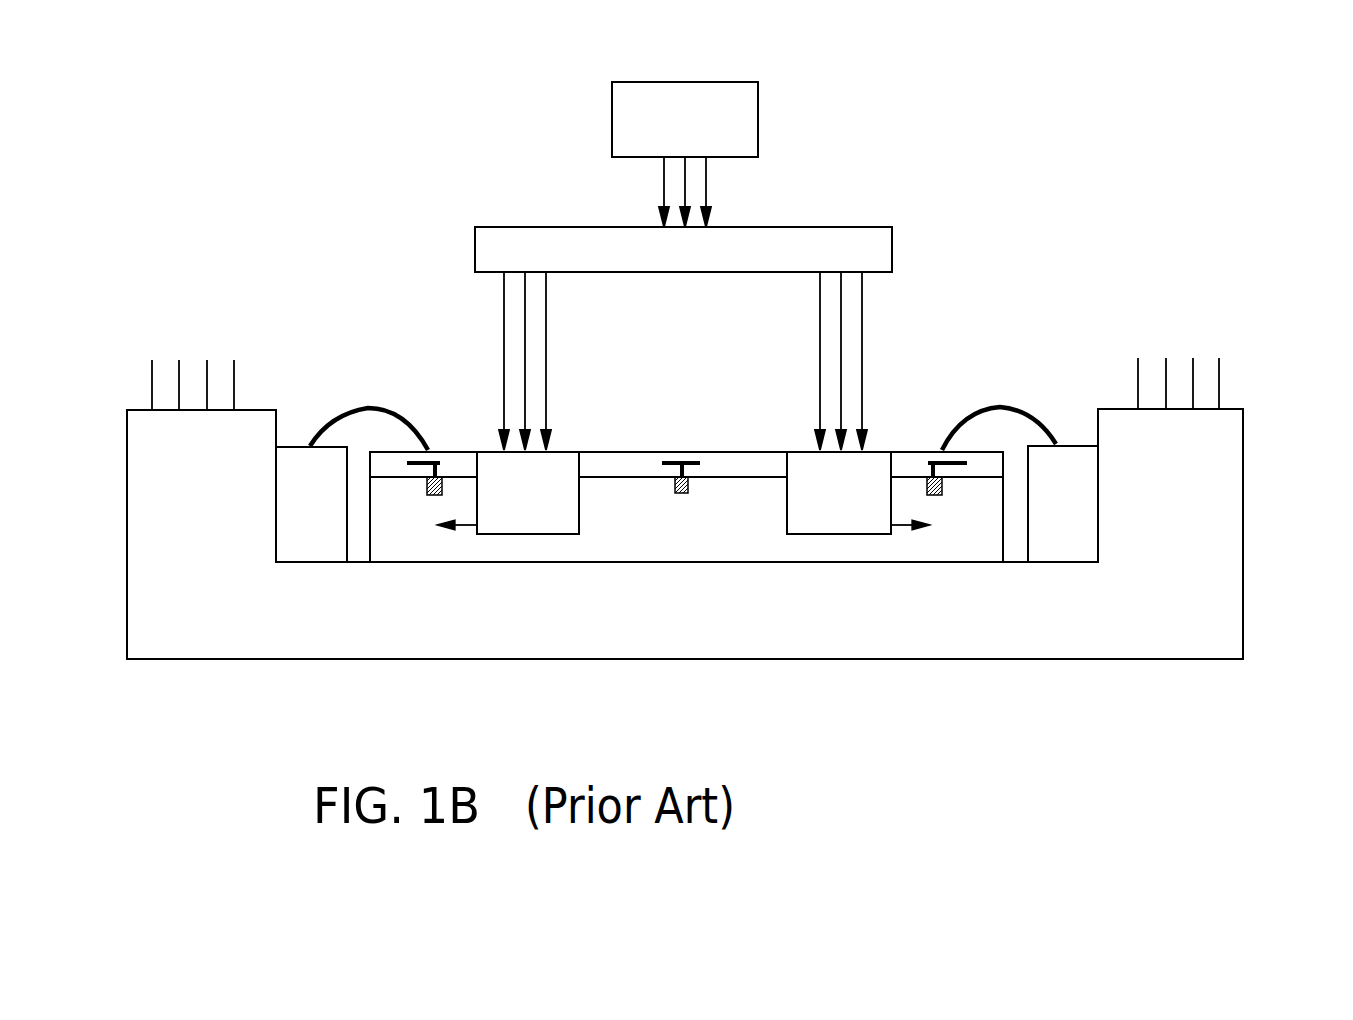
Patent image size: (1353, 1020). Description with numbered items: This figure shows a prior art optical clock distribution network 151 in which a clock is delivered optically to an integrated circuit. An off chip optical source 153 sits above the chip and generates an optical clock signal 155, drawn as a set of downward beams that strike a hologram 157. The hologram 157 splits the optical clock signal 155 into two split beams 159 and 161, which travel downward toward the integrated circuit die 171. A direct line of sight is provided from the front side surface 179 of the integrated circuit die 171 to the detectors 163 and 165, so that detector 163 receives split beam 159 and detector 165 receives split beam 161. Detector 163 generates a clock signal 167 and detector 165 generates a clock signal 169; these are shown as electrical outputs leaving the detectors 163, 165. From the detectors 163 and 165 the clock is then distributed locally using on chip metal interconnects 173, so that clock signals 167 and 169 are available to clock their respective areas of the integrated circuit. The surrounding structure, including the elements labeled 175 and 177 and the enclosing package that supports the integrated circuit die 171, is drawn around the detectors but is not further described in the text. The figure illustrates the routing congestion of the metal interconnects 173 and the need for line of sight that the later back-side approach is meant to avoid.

The optical clock distribution network 151 is at (1022, 112).
The off chip optical source 153 is at (759, 103).
The optical clock signal 155 is at (707, 192).
The hologram 157 is at (892, 257).
The split beam 159 is at (547, 348).
The split beam 161 is at (820, 325).
The detector 163 is at (580, 522).
The detector 165 is at (787, 518).
The clock signal 167 is at (447, 527).
The clock signal 169 is at (918, 527).
The integrated circuit die 171 is at (1003, 540).
The metal interconnects 173 is at (418, 462).
The bonding pad 175 is at (427, 484).
The package 177 is at (1243, 590).
The front side surface 179 is at (460, 452).